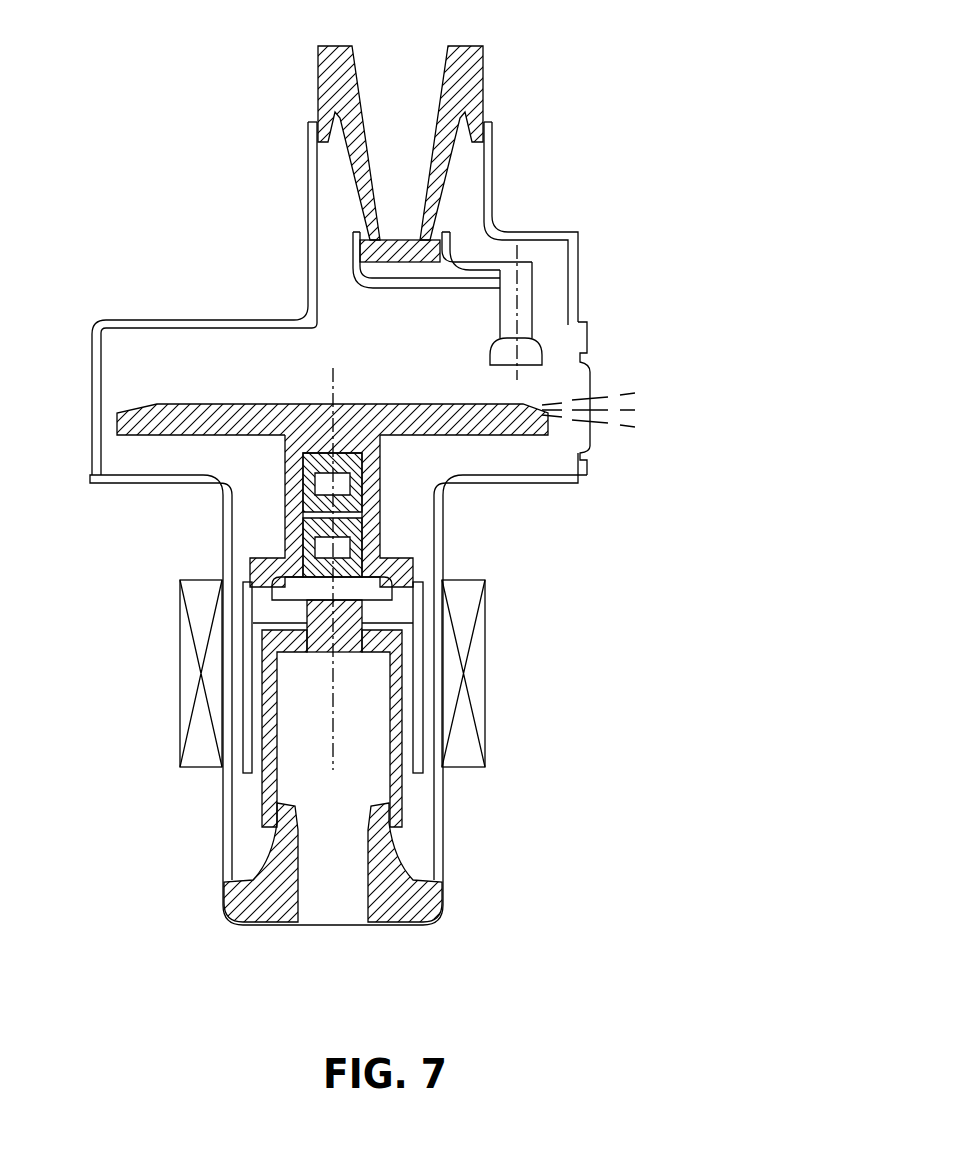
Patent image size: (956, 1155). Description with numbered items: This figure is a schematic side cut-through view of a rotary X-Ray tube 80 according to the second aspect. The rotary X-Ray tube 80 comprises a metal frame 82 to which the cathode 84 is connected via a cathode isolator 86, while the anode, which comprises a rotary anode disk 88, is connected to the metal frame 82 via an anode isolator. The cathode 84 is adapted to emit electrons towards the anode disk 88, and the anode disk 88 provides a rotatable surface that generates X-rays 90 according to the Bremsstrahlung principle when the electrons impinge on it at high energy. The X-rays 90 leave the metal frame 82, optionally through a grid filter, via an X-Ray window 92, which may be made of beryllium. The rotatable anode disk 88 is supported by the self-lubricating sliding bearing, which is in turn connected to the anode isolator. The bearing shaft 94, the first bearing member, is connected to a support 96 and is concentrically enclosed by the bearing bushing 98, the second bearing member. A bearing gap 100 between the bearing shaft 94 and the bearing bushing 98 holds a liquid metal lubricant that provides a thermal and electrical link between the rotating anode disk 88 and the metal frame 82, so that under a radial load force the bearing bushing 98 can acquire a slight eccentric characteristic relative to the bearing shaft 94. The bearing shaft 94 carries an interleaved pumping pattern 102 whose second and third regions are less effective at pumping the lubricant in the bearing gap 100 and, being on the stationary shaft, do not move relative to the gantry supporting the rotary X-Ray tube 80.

The rotary X-Ray tube 80 is at (553, 62).
The metal frame 82 is at (150, 320).
The cathode 84 is at (537, 344).
The cathode isolator 86 is at (498, 264).
The rotary anode disk 88 is at (523, 404).
The X-rays 90 is at (645, 408).
The X-Ray window 92 is at (590, 437).
The bearing shaft 94 is at (357, 542).
The support 96 is at (393, 775).
The bearing bushing 98 is at (283, 512).
The bearing gap 100 is at (320, 450).
The pumping pattern 102 is at (355, 490).